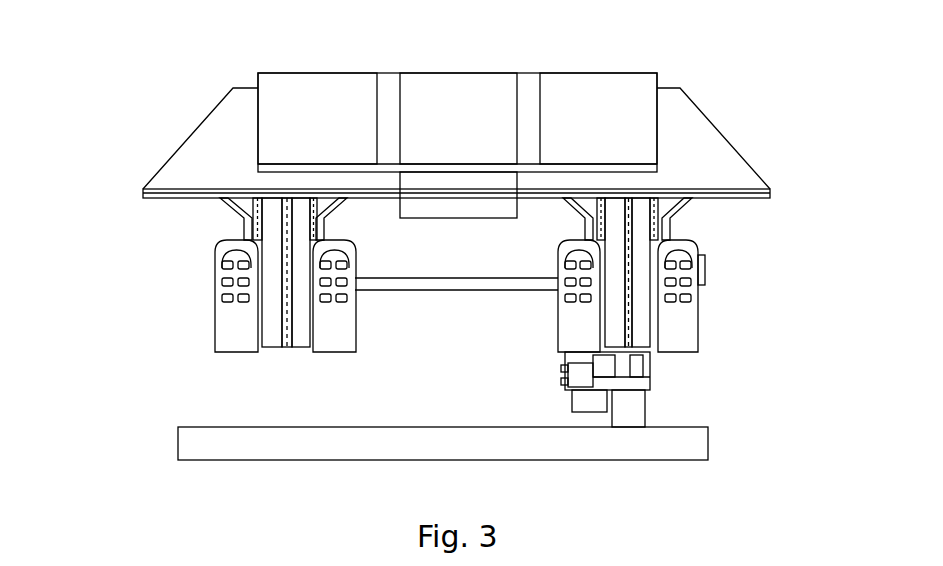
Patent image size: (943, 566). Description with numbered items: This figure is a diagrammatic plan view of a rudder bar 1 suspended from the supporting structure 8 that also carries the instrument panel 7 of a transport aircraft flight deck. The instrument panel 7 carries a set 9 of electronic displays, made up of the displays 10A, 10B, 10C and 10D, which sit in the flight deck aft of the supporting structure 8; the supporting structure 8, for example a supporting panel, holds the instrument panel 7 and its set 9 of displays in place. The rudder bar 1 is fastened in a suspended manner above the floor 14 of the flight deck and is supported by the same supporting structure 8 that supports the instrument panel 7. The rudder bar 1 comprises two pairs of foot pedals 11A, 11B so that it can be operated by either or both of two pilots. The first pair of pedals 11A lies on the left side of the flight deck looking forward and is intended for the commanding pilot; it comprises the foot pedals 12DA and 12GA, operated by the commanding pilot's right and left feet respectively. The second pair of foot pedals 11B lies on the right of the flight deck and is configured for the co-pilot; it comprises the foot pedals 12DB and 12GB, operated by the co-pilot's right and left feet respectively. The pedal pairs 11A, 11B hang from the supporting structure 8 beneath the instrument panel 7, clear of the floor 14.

The rudder bar 1 is at (140, 250).
The instrument panel 7 is at (183, 90).
The supporting structure 8 is at (188, 140).
The set of electronic displays 9 is at (295, 42).
The electronic display 10A is at (325, 72).
The electronic display 10B is at (468, 72).
The electronic display 10C is at (615, 72).
The electronic display 10D is at (450, 216).
The first pair of foot pedals 11A is at (253, 362).
The second pair of foot pedals 11B is at (699, 360).
The foot pedal 12GA is at (215, 340).
The foot pedal 12DA is at (340, 352).
The foot pedal 12GB is at (560, 343).
The foot pedal 12DB is at (694, 330).
The floor 14 is at (223, 462).